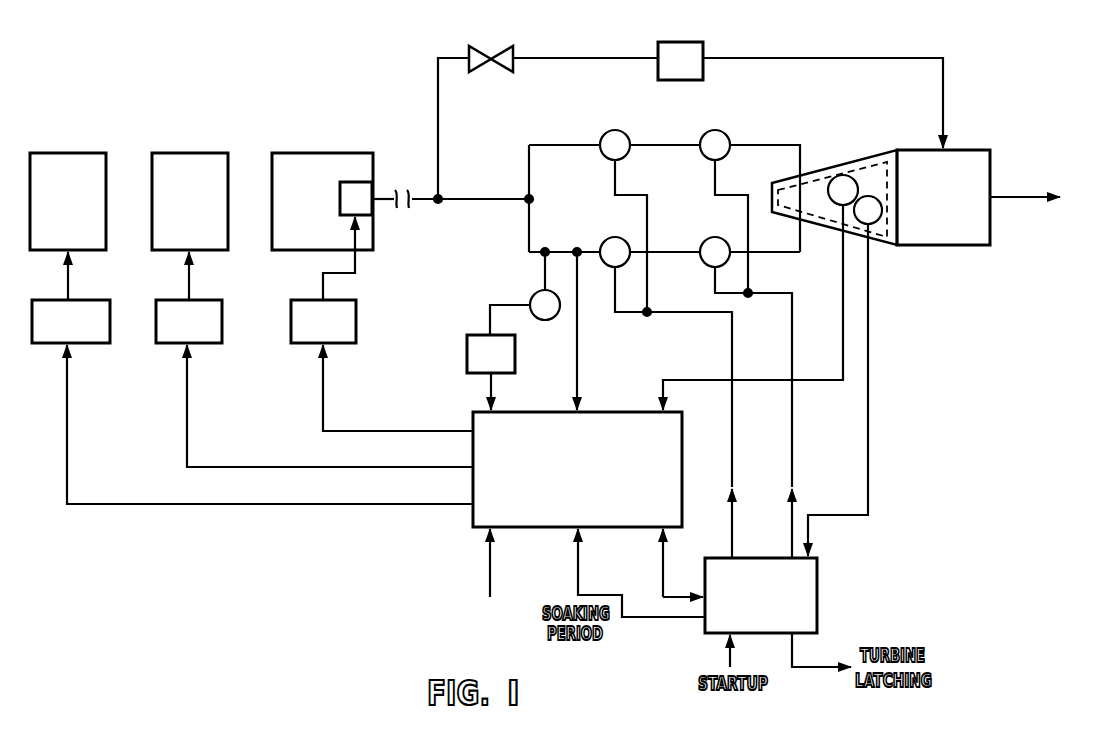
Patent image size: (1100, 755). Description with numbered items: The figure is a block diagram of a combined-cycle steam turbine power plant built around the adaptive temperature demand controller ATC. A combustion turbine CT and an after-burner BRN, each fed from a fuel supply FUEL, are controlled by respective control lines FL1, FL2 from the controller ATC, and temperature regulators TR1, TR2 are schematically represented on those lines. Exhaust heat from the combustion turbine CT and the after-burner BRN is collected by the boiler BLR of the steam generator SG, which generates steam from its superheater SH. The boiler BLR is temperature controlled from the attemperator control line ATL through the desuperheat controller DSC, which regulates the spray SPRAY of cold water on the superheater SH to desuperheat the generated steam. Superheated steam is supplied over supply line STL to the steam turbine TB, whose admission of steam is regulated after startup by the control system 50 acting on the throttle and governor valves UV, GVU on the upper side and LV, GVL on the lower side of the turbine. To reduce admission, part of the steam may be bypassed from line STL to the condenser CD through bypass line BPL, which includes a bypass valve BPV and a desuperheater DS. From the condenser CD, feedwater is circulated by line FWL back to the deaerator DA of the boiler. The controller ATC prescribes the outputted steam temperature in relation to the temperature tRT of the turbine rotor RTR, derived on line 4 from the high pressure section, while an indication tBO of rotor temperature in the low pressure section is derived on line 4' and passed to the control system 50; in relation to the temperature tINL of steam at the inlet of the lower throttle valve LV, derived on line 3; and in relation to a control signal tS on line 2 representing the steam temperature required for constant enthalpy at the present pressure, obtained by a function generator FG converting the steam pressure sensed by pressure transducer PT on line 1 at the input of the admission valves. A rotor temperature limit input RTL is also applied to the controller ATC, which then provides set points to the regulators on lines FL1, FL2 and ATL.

The steam generator SG is at (228, 125).
The combustion turbine CT is at (68, 201).
The after-burner BRN is at (190, 201).
The boiler BLR is at (310, 200).
The superheater SH is at (356, 198).
The fuel supply FUEL is at (127, 297).
The temperature regulator TR1 is at (87, 300).
The temperature regulator TR2 is at (164, 343).
The attemperator spray SPRAY is at (323, 280).
The desuperheat controller DSC is at (356, 322).
The supply line STL is at (420, 198).
The bypass line BPL is at (438, 73).
The bypass valve BPV is at (496, 68).
The desuperheater DS is at (680, 61).
The throttle valve UV is at (617, 132).
The governor valve GVU is at (708, 132).
The throttle valve LV is at (617, 238).
The governor valve GVL is at (713, 238).
The steam turbine TB is at (828, 206).
The rotor RTR is at (833, 226).
The line 4 is at (760, 295).
The line 4' is at (860, 376).
The bore temperature signal tBO is at (877, 222).
The condenser CD is at (943, 197).
The feedwater line FWL is at (1025, 180).
The deaerator DA is at (1085, 200).
The pressure transducer PT is at (525, 293).
The line 1 is at (507, 304).
The function generator FG is at (491, 354).
The line 2 is at (487, 386).
The line 3 is at (578, 283).
The saturation temperature signal tS is at (517, 390).
The inlet steam temperature tINL is at (609, 390).
The rotor temperature tRT is at (697, 390).
The adaptive temperature demand controller ATC is at (473, 521).
The attemperator control line ATL is at (323, 372).
The control line FL1 is at (228, 504).
The control line FL2 is at (230, 467).
The rotor temperature limit input RTL is at (487, 570).
The control system 50 is at (817, 584).